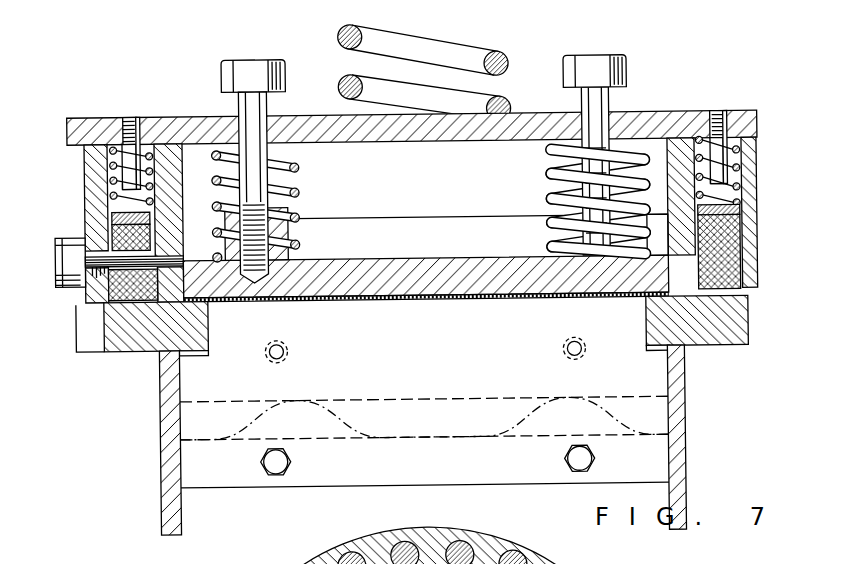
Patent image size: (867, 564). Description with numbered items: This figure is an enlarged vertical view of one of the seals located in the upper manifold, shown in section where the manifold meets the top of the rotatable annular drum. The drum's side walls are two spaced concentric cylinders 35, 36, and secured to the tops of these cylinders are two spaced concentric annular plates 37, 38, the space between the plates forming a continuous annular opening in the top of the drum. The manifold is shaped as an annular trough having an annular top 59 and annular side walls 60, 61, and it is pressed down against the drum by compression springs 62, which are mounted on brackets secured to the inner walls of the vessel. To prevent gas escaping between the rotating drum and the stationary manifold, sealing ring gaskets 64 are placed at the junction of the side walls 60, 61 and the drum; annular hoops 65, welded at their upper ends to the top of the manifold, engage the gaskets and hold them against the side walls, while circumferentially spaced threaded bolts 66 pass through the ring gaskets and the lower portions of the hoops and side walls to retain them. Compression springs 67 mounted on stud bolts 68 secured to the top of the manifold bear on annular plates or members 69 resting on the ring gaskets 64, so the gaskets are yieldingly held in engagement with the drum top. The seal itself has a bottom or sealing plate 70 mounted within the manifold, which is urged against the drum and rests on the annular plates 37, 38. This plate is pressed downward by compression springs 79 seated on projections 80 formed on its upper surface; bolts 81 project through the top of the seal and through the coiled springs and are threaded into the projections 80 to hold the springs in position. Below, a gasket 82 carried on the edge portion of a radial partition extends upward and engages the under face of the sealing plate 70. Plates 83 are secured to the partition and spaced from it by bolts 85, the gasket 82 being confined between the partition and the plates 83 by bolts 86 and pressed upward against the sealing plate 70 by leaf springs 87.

The concentric cylinder 35 is at (684, 437).
The concentric cylinder 36 is at (158, 437).
The annular plate 37 is at (652, 318).
The annular plate 38 is at (200, 335).
The annular top 59 is at (640, 114).
The annular side wall 60 is at (180, 209).
The annular side wall 61 is at (672, 181).
The compression spring 62 is at (490, 48).
The sealing ring gasket 64 is at (150, 283).
The annular hoop 65 is at (95, 201).
The threaded bolt 66 is at (103, 302).
The compression spring 67 is at (149, 151).
The stud bolt 68 is at (127, 151).
The annular plate 69 is at (112, 216).
The bottom or sealing plate 70 is at (463, 304).
The compression spring 79 is at (297, 194).
The projection 80 is at (294, 240).
The bolt 81 is at (266, 110).
The gasket 82 is at (362, 302).
The plate 83 is at (497, 486).
The bolt 85 is at (288, 462).
The bolt 86 is at (283, 351).
The leaf spring 87 is at (383, 424).